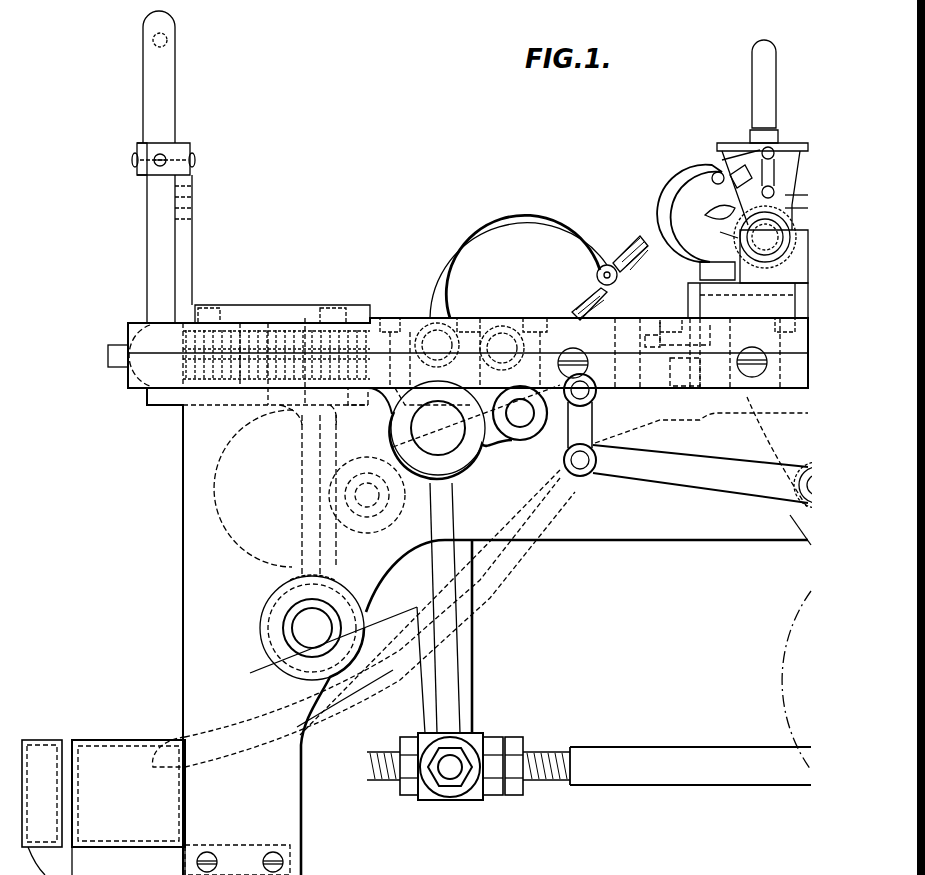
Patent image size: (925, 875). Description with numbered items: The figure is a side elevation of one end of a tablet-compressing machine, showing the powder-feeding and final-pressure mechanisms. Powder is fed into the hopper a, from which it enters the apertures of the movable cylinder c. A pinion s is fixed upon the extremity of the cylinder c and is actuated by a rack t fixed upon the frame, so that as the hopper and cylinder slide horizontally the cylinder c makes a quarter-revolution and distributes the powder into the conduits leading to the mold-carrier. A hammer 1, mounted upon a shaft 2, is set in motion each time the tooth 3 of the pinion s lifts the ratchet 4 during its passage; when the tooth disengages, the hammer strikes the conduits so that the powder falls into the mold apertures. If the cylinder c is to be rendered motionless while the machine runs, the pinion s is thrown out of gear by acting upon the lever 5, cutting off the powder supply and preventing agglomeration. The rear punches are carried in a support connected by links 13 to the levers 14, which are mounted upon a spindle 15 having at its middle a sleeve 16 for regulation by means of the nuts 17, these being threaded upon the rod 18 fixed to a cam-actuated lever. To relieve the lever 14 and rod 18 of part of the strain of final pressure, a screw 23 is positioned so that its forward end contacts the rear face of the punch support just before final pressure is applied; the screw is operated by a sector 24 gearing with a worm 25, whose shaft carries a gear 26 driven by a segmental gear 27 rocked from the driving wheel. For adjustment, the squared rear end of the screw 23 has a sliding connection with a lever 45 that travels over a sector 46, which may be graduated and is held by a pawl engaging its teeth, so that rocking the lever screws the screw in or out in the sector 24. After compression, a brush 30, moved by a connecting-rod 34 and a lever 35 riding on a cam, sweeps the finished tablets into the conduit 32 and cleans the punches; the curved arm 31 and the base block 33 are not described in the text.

The hammer 1 is at (712, 258).
The shaft 2 is at (712, 176).
The tooth 3 is at (787, 150).
The ratchet 4 is at (712, 213).
The lever 5 is at (776, 62).
The links 13 is at (435, 342).
The levers 14 is at (470, 650).
The spindle 15 is at (450, 775).
The sleeve 16 is at (475, 795).
The nuts 17 is at (405, 790).
The rod 18 is at (680, 765).
The screw 23 is at (305, 318).
The sector 24 is at (292, 578).
The worm 25 is at (298, 628).
The gear 26 is at (288, 657).
The segmental gear 27 is at (272, 487).
The brush 30 is at (607, 264).
The curved arm 31 is at (530, 235).
The conduit 32 is at (632, 425).
The base block 33 is at (103, 807).
The connecting-rod 34 is at (560, 440).
The lever 35 is at (737, 483).
The lever 45 is at (160, 92).
The sector 46 is at (178, 242).
The hopper a is at (722, 160).
The movable cylinder c is at (738, 240).
The pinion s is at (740, 272).
The rack t is at (700, 292).